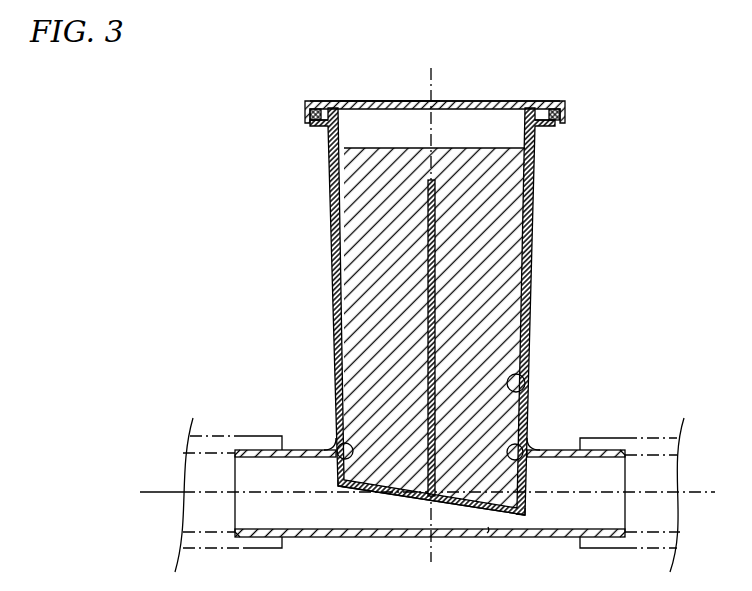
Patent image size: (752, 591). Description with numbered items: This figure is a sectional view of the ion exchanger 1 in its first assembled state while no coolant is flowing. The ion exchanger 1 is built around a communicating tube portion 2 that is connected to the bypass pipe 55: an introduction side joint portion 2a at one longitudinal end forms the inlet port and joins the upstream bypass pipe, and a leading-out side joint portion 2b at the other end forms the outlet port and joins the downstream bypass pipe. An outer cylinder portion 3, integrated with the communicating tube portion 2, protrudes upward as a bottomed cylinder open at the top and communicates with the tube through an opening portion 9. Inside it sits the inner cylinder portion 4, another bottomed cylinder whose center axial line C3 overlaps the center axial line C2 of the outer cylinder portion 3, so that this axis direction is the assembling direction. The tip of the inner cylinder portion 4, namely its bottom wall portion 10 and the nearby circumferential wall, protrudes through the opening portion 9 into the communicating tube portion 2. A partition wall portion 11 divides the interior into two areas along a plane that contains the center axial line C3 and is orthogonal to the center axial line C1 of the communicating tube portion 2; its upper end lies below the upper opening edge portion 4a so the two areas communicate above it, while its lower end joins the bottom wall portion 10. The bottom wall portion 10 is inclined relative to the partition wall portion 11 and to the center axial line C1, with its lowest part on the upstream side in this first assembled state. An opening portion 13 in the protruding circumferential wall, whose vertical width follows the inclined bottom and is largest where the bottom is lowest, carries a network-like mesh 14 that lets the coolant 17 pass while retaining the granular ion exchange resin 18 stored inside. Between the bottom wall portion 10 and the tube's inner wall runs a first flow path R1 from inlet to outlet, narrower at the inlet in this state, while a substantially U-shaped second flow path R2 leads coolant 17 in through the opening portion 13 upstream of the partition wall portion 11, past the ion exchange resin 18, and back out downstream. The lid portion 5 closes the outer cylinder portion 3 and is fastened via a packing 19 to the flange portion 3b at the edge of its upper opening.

The ion exchanger 1 is at (429, 327).
The communicating tube portion 2 is at (429, 478).
The introduction side joint portion 2a is at (600, 548).
The leading-out side joint portion 2b is at (262, 540).
The outer cylinder portion 3 is at (435, 312).
The flange portion 3b is at (314, 128).
The inner cylinder portion 4 is at (436, 145).
The upper opening edge portion 4a is at (392, 101).
The lid portion 5 is at (485, 101).
The opening portion 9 is at (545, 467).
The bottom wall portion 10 is at (400, 485).
The partition wall portion 11 is at (437, 278).
The opening portion 13 is at (340, 447).
The mesh 14 is at (338, 485).
The coolant 17 is at (285, 514).
The ion exchange resin 18 is at (371, 247).
The packing 19 is at (306, 108).
The bypass pipe 55 is at (235, 436).
The center axial line of the communicating tube portion C1 is at (183, 492).
The center axial line of the outer cylinder portion C2 is at (430, 568).
The center axial line of the inner cylinder portion C3 is at (377, 321).
The first flow path R1 is at (488, 527).
The second flow path R2 is at (526, 378).